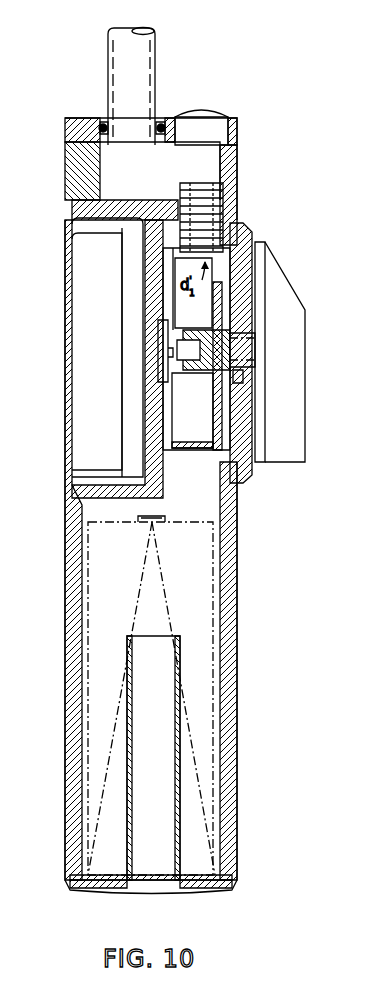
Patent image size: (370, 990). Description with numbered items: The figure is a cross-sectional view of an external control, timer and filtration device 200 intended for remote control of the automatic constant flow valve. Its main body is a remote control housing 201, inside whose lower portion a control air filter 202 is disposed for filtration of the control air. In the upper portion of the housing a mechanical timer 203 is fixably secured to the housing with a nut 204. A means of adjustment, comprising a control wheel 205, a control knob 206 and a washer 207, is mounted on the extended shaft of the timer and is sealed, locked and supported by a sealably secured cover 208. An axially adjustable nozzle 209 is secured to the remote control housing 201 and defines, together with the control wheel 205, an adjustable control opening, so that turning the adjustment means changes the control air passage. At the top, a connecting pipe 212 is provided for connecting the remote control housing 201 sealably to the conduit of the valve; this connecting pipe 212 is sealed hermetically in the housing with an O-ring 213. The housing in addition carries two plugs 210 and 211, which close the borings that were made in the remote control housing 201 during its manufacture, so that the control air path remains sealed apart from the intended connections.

The external control, timer and filtration device 200 is at (238, 624).
The remote control housing 201 is at (75, 575).
The control air filter 202 is at (88, 695).
The mechanical timer 203 is at (83, 323).
The nut 204 is at (165, 363).
The control wheel 205 is at (207, 448).
The control knob 206 is at (287, 307).
The washer 207 is at (218, 380).
The cover 208 is at (250, 237).
The axially adjustable nozzle 209 is at (183, 187).
The plug 210 is at (73, 178).
The plug 211 is at (208, 115).
The connecting pipe 212 is at (122, 60).
The O-ring 213 is at (100, 127).